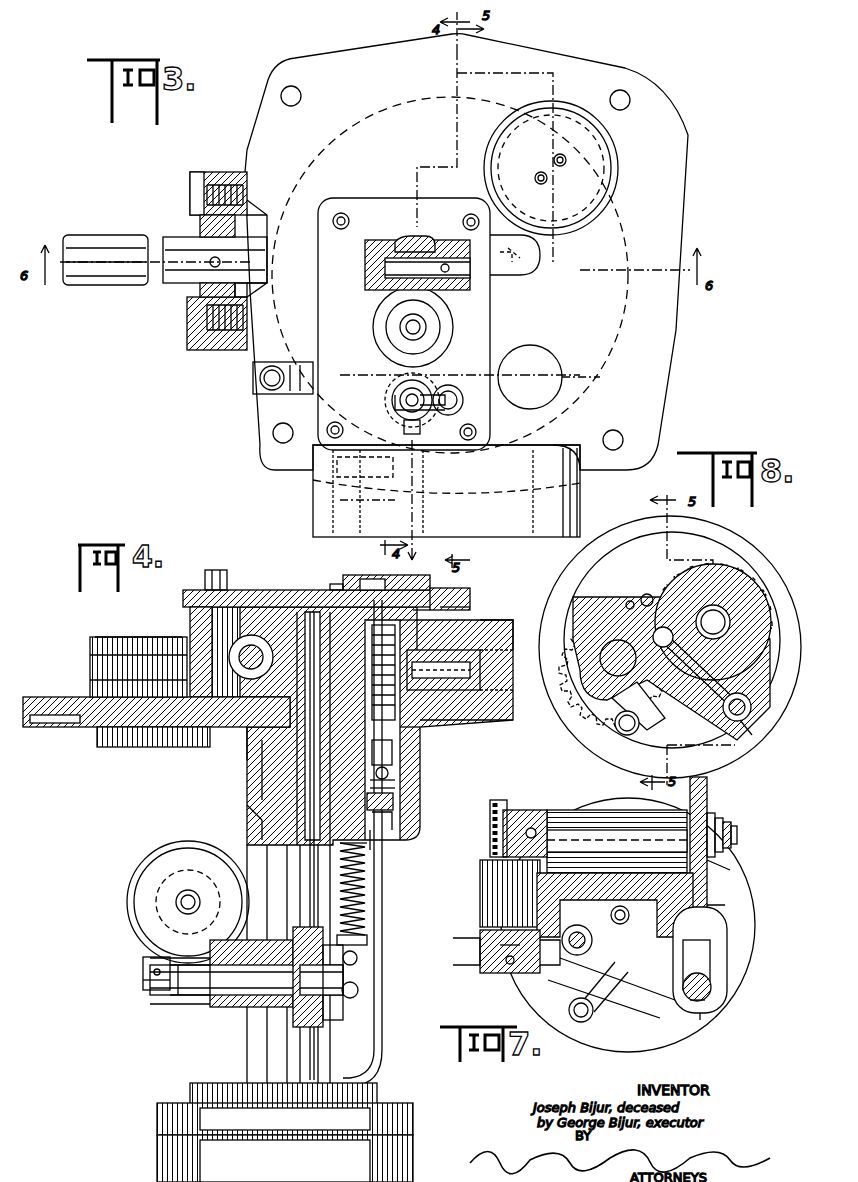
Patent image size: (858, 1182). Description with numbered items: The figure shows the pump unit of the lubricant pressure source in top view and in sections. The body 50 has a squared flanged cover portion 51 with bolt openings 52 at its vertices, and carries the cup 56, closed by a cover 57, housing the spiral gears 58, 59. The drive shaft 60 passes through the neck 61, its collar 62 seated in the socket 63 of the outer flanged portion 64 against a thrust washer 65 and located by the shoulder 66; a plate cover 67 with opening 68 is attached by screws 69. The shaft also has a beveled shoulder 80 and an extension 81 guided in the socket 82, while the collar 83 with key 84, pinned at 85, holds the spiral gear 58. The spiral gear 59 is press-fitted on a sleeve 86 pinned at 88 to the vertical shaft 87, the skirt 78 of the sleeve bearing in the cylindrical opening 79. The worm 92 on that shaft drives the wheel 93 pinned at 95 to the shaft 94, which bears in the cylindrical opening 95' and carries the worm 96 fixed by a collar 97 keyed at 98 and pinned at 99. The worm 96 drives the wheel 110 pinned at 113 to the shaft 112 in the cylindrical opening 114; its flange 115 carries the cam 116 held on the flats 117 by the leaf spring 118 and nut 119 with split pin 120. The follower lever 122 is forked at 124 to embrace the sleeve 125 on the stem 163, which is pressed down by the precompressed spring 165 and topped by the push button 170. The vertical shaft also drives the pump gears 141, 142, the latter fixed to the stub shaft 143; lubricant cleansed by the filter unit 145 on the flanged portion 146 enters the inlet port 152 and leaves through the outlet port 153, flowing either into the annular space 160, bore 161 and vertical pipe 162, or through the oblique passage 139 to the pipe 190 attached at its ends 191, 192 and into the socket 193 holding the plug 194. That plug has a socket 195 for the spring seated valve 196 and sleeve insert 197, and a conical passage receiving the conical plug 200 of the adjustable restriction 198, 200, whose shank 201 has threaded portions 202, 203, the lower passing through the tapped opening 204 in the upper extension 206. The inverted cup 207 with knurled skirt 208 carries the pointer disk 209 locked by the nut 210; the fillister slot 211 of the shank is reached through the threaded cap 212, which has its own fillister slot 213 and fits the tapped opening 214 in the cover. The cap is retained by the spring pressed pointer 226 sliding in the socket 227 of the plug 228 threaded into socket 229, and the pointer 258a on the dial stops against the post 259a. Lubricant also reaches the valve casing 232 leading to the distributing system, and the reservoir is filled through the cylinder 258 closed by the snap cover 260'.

In FIG. 4, the support 50 is at (262, 815).
In FIG. 3, the horizontal squared flanged cover portion 51 is at (660, 345).
In FIG. 4, the horizontal squared flanged cover portion 51 is at (60, 697).
In FIG. 3, the openings 52 is at (291, 86).
In FIG. 3, the cup 56 is at (330, 440).
In FIG. 4, the cup 56 is at (192, 612).
In FIG. 4, the cover 57 is at (235, 590).
In FIG. 3, the spiral gear 58 is at (420, 236).
In FIG. 4, the spiral gear 58 is at (195, 747).
In FIG. 3, the spiral gear 59 is at (470, 335).
In FIG. 4, the spiral gear 59 is at (247, 730).
In FIG. 3, the shaft 60 is at (98, 270).
In FIG. 3, the neck 61 is at (255, 222).
In FIG. 3, the collar 62 is at (190, 310).
In FIG. 3, the socket 63 is at (208, 340).
In FIG. 3, the outer flanged portion 64 is at (232, 345).
In FIG. 3, the thrust washer 65 is at (250, 200).
In FIG. 3, the shoulder 66 is at (210, 250).
In FIG. 3, the plate cover 67 is at (193, 210).
In FIG. 3, the opening 68 is at (200, 225).
In FIG. 3, the screws 69 is at (192, 180).
In FIG. 4, the skirt 78 is at (297, 760).
In FIG. 4, the cylindrical opening 79 is at (305, 790).
In FIG. 3, the beveled shoulder 80 is at (395, 240).
In FIG. 3, the extension 81 is at (520, 258).
In FIG. 3, the socket 82 is at (465, 280).
In FIG. 3, the collar 83 is at (452, 240).
In FIG. 3, the key 84 is at (400, 318).
In FIG. 3, the pin 85 is at (480, 225).
In FIG. 4, the sleeve 86 is at (255, 607).
In FIG. 3, the vertical shaft 87 is at (282, 424).
In FIG. 4, the vertical shaft 87 is at (262, 833).
In FIG. 8, the vertical shaft 87 is at (612, 700).
In FIG. 7, the vertical shaft 87 is at (575, 965).
In FIG. 4, the pin 88 is at (300, 620).
In FIG. 7, the worm 92 is at (580, 940).
In FIG. 4, the wheel 93 is at (305, 1025).
In FIG. 7, the wheel 93 is at (480, 955).
In FIG. 4, the shaft 94 is at (258, 975).
In FIG. 7, the shaft 94 is at (482, 895).
In FIG. 4, the pin 95 is at (371, 982).
In FIG. 7, the pin 95 is at (494, 969).
In FIG. 4, the cylindrical opening 95' is at (184, 996).
In FIG. 4, the worm 96 is at (185, 995).
In FIG. 4, the collar 97 is at (145, 982).
In FIG. 4, the key 98 is at (145, 962).
In FIG. 4, the pin 99 is at (145, 972).
In FIG. 4, the wheel 110 is at (178, 865).
In FIG. 7, the wheel 110 is at (508, 812).
In FIG. 4, the shaft 112 is at (176, 902).
In FIG. 7, the shaft 112 is at (565, 828).
In FIG. 7, the pin 113 is at (531, 828).
In FIG. 7, the cylindrical opening 114 is at (590, 830).
In FIG. 7, the flange 115 is at (715, 820).
In FIG. 7, the cam 116 is at (708, 790).
In FIG. 7, the flats 117 is at (723, 828).
In FIG. 7, the leaf spring 118 is at (712, 880).
In FIG. 7, the nut 119 is at (731, 832).
In FIG. 7, the split pin 120 is at (737, 840).
In FIG. 7, the follower lever 122 is at (700, 915).
In FIG. 7, the fork 124 is at (712, 988).
In FIG. 8, the sleeve 125 is at (745, 712).
In FIG. 7, the sleeve 125 is at (690, 1000).
In FIG. 8, the oblique passage 139 is at (700, 680).
In FIG. 8, the gear 141 is at (570, 630).
In FIG. 8, the gear 142 is at (745, 585).
In FIG. 8, the stub shaft 143 is at (713, 605).
In FIG. 4, the filter unit 145 is at (413, 1163).
In FIG. 4, the flanged portion 146 is at (413, 1125).
In FIG. 8, the inlet port 152 is at (647, 595).
In FIG. 8, the outlet port 153 is at (622, 676).
In FIG. 8, the annular space 160 is at (752, 710).
In FIG. 8, the bore 161 is at (705, 715).
In FIG. 3, the vertical pipe 162 is at (440, 300).
In FIG. 8, the vertical pipe 162 is at (630, 600).
In FIG. 7, the vertical pipe 162 is at (620, 925).
In FIG. 4, the stem 163 is at (367, 912).
In FIG. 8, the stem 163 is at (742, 722).
In FIG. 7, the stem 163 is at (700, 1005).
In FIG. 4, the precompressed spring 165 is at (367, 895).
In FIG. 3, the push plate 170 is at (555, 385).
In FIG. 4, the pipe 190 is at (384, 965).
In FIG. 7, the pipe 190 is at (578, 1020).
In FIG. 4, the pipe end 191 is at (384, 1065).
In FIG. 7, the pipe end 191 is at (610, 985).
In FIG. 4, the pipe outlet end 192 is at (370, 860).
In FIG. 4, the socket 193 is at (372, 845).
In FIG. 4, the plug 194 is at (395, 782).
In FIG. 4, the socket 195 is at (395, 790).
In FIG. 4, the spring seated valve 196 is at (395, 805).
In FIG. 4, the sleeve insert 197 is at (392, 820).
In FIG. 4, the conical valve 198 is at (395, 748).
In FIG. 4, the conically shaped plug 200 is at (390, 773).
In FIG. 4, the shank 201 is at (470, 622).
In FIG. 4, the upper threaded portion 202 is at (372, 635).
In FIG. 4, the lower threaded portion 203 is at (500, 722).
In FIG. 4, the tapped opening 204 is at (460, 722).
In FIG. 4, the upper extension 206 is at (262, 765).
In FIG. 4, the inverted cup 207 is at (440, 615).
In FIG. 4, the skirt 208 is at (415, 730).
In FIG. 3, the pointer disk 209 is at (398, 412).
In FIG. 4, the pointer disk 209 is at (455, 605).
In FIG. 3, the nut 210 is at (450, 385).
In FIG. 4, the nut 210 is at (440, 600).
In FIG. 3, the fillister slotted portion 211 is at (408, 432).
In FIG. 4, the fillister slotted portion 211 is at (435, 588).
In FIG. 4, the threaded cap 212 is at (360, 575).
In FIG. 4, the fillister slot 213 is at (378, 579).
In FIG. 4, the tapped opening 214 is at (336, 587).
In FIG. 3, the spring pressed pointer 226 is at (440, 420).
In FIG. 4, the spring pressed pointer 226 is at (510, 622).
In FIG. 3, the elongated cylindrical socket 227 is at (400, 480).
In FIG. 4, the elongated cylindrical socket 227 is at (510, 695).
In FIG. 4, the plug 228 is at (480, 668).
In FIG. 3, the socket 229 is at (430, 518).
In FIG. 4, the socket 229 is at (500, 712).
In FIG. 3, the valve casing 232 is at (255, 385).
In FIG. 4, the cylinder 258 is at (110, 672).
In FIG. 3, the pointer 258a is at (470, 372).
In FIG. 3, the post 259a is at (440, 410).
In FIG. 3, the snap cover 260' is at (616, 168).
In FIG. 4, the snap cover 260' is at (137, 619).